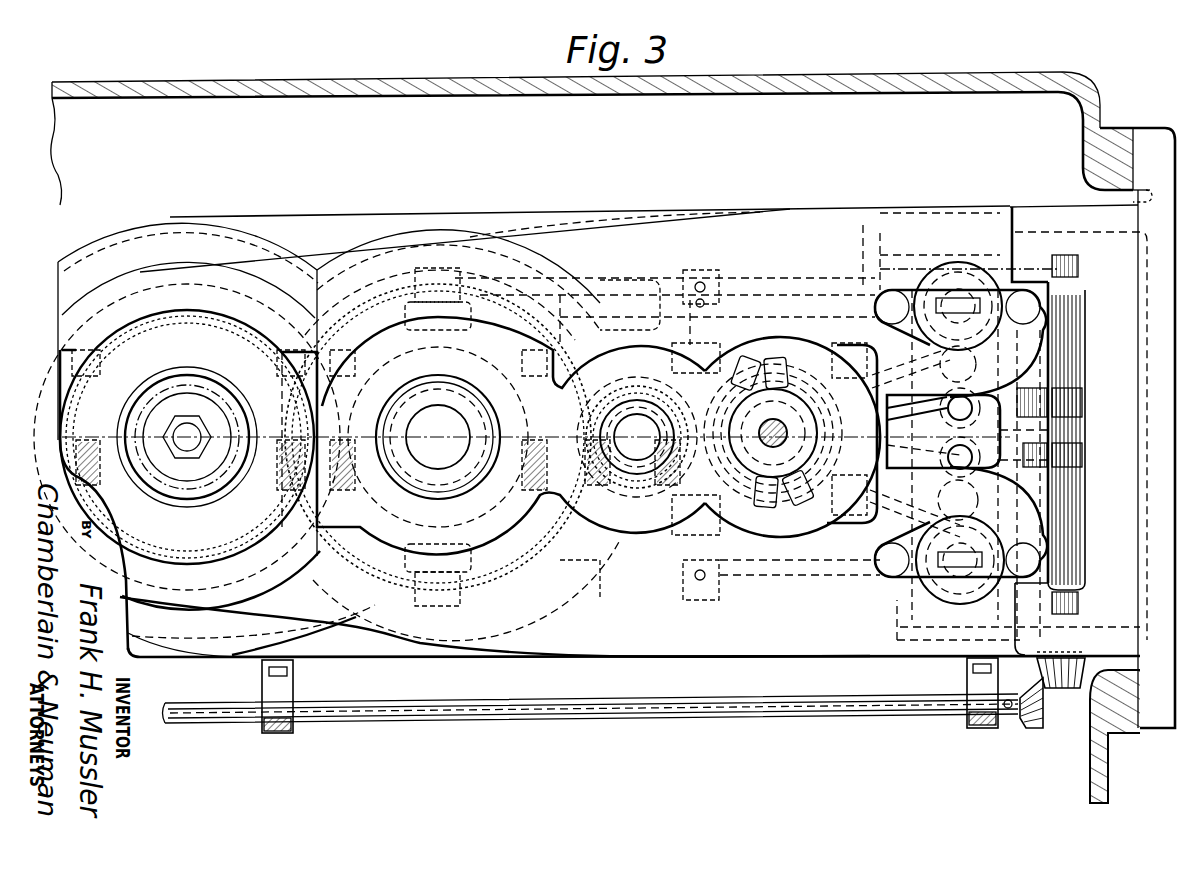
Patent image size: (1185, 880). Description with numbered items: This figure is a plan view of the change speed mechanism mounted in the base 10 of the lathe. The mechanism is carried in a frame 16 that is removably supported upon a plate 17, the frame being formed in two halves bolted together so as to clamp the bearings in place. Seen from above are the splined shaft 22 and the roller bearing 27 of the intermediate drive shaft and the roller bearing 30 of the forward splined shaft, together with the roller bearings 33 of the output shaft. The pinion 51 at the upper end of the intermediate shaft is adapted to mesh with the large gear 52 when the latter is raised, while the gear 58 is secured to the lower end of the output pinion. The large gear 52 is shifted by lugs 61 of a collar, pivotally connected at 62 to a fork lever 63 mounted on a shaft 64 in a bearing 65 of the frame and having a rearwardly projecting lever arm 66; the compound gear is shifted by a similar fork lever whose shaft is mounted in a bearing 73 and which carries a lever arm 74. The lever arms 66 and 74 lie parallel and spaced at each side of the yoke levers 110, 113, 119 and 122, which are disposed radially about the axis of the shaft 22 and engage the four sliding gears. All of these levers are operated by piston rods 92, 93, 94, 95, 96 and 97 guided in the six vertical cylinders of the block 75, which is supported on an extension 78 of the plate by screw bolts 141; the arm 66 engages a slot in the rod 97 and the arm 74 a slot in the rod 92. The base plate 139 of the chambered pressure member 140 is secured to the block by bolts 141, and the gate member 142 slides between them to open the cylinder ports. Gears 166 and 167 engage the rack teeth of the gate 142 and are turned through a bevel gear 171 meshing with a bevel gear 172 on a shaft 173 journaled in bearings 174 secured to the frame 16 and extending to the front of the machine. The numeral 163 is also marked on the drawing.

The base 10 is at (755, 97).
The frame 16 is at (823, 216).
The plate 17 is at (1152, 235).
The shaft 22 is at (752, 468).
The roller bearing 27 is at (648, 400).
The roller bearing 30 is at (445, 395).
The roller bearings 33 is at (210, 392).
The pinion 51 is at (608, 398).
The large gear 52 is at (385, 300).
The gear 58 is at (190, 332).
The lugs 61 is at (480, 300).
The pivot connection 62 is at (447, 292).
The fork lever 63 is at (600, 292).
The shaft 64 is at (694, 600).
The bearing 65 is at (735, 578).
The lever arm 66 is at (820, 560).
The bearing 73 is at (745, 318).
The lever arm 74 is at (720, 270).
The frame or block 75 is at (1080, 495).
The extension 78 is at (1075, 222).
The piston rod 92 is at (960, 260).
The piston rod 93 is at (998, 433).
The piston rod 94 is at (965, 414).
The piston rod 95 is at (968, 457).
The piston rod 96 is at (990, 490).
The piston rod 97 is at (962, 610).
The yoke lever 110 is at (943, 431).
The yoke lever 113 is at (924, 508).
The yoke lever 119 is at (924, 366).
The yoke lever 122 is at (923, 442).
The base plate 139 is at (1050, 358).
The pressure member 140 is at (1087, 440).
The bolts 141 is at (905, 232).
The gate member 142 is at (1068, 470).
The bracket 163 is at (600, 603).
The gear 166 is at (1090, 405).
The gear 167 is at (1090, 418).
The bevel gear 171 is at (1075, 690).
The bevel gear 172 is at (1025, 722).
The shaft 173 is at (712, 715).
The bearings 174 is at (278, 733).